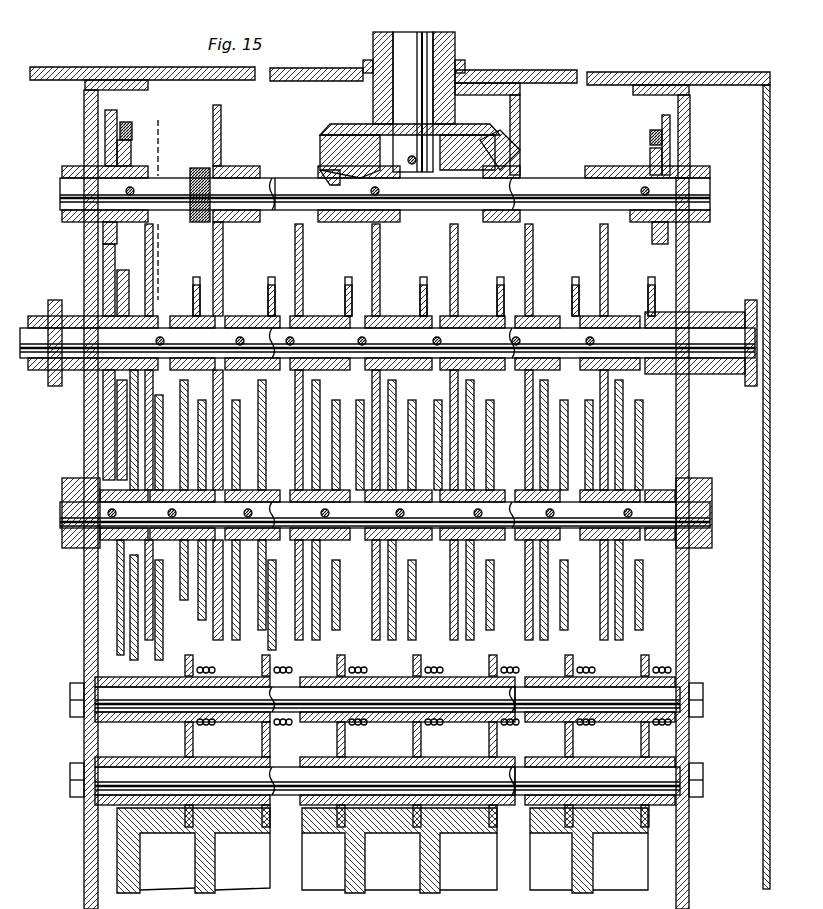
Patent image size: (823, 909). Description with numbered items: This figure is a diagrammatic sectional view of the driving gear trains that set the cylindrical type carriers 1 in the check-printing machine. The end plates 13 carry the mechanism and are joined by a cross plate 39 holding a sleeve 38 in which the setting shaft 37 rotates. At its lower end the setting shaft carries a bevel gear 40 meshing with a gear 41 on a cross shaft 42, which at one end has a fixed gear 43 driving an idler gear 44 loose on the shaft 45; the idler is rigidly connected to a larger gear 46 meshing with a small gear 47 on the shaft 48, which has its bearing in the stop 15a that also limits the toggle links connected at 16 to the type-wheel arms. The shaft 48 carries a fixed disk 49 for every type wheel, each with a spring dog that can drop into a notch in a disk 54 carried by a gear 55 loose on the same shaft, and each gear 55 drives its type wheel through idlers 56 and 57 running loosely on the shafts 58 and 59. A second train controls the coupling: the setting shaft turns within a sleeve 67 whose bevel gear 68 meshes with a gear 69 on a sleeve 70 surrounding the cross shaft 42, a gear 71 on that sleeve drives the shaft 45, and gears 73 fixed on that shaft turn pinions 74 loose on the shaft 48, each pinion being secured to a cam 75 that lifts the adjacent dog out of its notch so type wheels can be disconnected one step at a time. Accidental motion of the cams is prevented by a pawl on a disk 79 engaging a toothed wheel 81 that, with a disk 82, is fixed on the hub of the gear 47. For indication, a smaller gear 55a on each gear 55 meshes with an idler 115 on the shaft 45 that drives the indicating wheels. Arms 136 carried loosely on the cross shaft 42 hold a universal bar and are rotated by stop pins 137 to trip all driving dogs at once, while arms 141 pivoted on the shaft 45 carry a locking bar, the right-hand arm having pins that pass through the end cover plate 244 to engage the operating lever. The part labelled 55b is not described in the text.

The cylindrical type carrier 1 is at (383, 849).
The supporting plate 13 is at (84, 820).
The stop 15a is at (68, 546).
The connection 16 is at (160, 210).
The setting shaft 37 is at (413, 102).
The sleeve 38 is at (445, 100).
The cross plate 39 is at (518, 74).
The bevel gear 40 is at (385, 194).
The gear 41 is at (360, 228).
The cross shaft 42 is at (275, 210).
The gear 43 is at (110, 250).
The idler gear 44 is at (125, 293).
The shaft 45 is at (387, 343).
The larger gear 46 is at (105, 412).
The small gear 47 is at (100, 566).
The shaft 48 is at (385, 515).
The disk 49 is at (234, 640).
The disk 54 is at (268, 628).
The gear 55 is at (270, 646).
The smaller gear 55a is at (262, 600).
The lever foot 55b is at (232, 672).
The idler 56 is at (494, 678).
The idler 57 is at (488, 760).
The shaft 58 is at (386, 699).
The shaft 59 is at (386, 781).
The sleeve 67 is at (455, 62).
The bevel gear 68 is at (494, 136).
The gear 69 is at (328, 235).
The sleeve 70 is at (280, 190).
The gear 71 is at (221, 160).
The gear 73 is at (153, 296).
The pinion 74 is at (220, 580).
The cam 75 is at (222, 614).
The disk 79 is at (132, 628).
The wheel 81 is at (118, 600).
The disk 82 is at (118, 650).
The idler 115 is at (345, 298).
The arm 136 is at (112, 152).
The stop pin 137 is at (128, 124).
The arm 141 is at (50, 386).
The end cover plate 244 is at (763, 800).